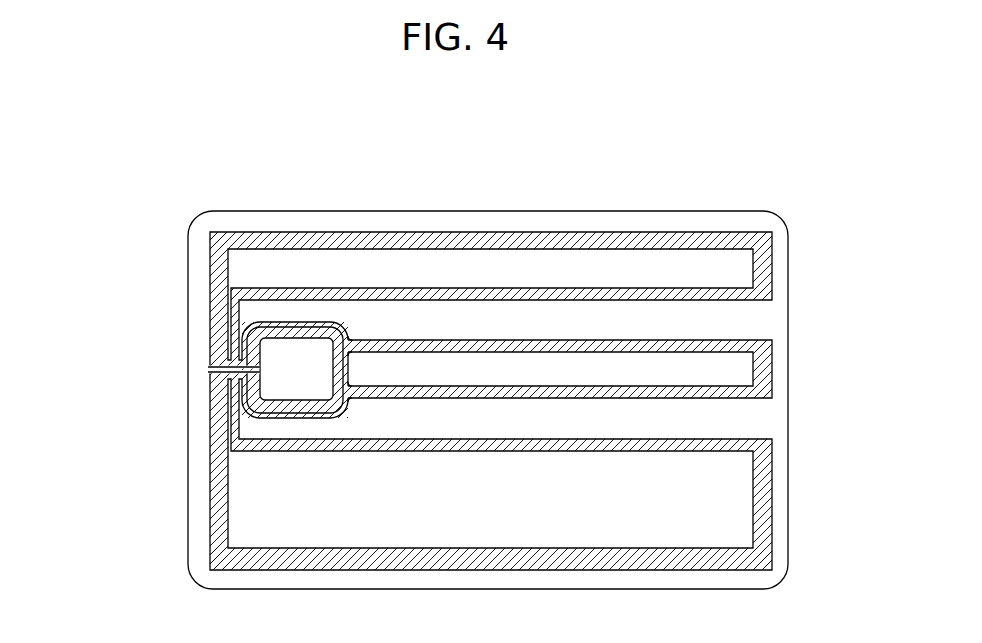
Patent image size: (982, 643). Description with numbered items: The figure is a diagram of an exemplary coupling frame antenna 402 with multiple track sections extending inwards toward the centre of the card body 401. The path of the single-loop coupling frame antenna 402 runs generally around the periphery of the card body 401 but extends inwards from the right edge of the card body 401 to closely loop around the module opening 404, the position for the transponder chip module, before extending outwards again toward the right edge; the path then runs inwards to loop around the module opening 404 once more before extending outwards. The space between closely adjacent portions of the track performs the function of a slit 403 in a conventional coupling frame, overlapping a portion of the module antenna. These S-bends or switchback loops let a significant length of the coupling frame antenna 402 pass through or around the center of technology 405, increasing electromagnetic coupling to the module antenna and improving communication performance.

The card body 401 is at (596, 213).
The coupling frame antenna 402 is at (427, 359).
The slit 403 is at (227, 372).
The module opening 404 is at (242, 413).
The center of technology 405 is at (485, 396).